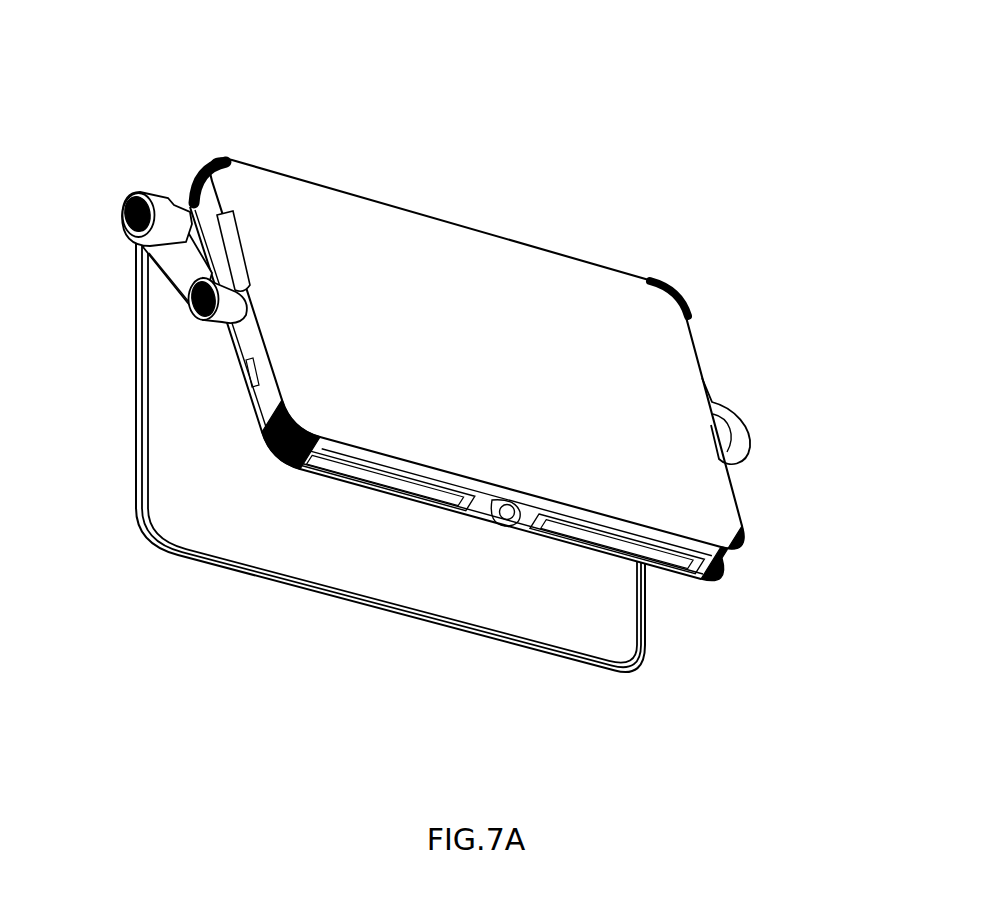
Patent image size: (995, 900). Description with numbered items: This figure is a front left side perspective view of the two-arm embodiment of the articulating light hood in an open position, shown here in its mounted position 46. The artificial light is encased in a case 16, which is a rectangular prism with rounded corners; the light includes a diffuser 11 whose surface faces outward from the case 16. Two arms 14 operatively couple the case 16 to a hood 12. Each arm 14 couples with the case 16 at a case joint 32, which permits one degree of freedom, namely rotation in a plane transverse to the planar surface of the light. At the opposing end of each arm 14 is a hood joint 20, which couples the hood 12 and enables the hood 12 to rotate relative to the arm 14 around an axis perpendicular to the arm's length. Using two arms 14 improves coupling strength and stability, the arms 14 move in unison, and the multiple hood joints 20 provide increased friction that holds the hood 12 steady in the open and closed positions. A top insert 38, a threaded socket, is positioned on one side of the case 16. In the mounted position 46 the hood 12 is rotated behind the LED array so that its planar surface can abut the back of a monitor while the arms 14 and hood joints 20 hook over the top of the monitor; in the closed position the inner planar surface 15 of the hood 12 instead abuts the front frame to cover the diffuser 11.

The diffuser 11 is at (414, 287).
The hood 12 is at (485, 641).
The arm 14 is at (230, 163).
The inner planar surface 15 is at (379, 565).
The case 16 is at (686, 555).
The hood joint 20 is at (142, 189).
The case joint 32 is at (230, 290).
The top insert 38 is at (507, 513).
The mounted position 46 is at (191, 598).